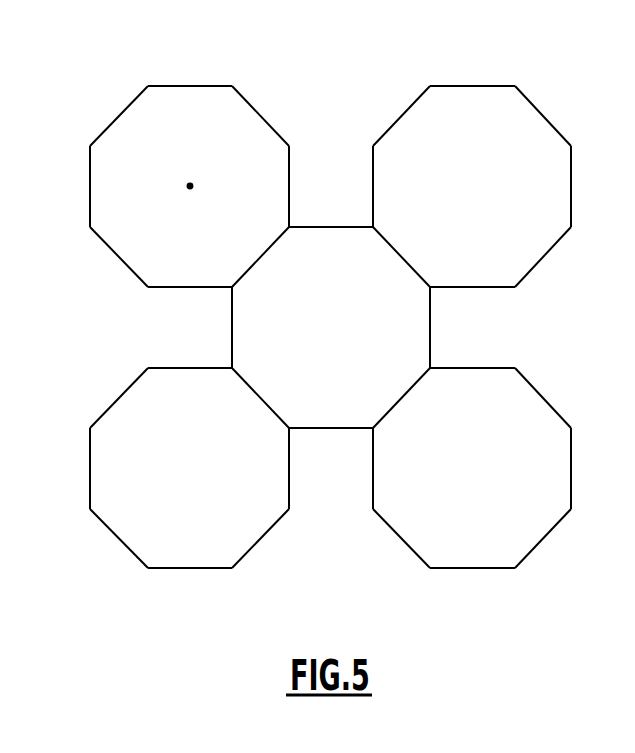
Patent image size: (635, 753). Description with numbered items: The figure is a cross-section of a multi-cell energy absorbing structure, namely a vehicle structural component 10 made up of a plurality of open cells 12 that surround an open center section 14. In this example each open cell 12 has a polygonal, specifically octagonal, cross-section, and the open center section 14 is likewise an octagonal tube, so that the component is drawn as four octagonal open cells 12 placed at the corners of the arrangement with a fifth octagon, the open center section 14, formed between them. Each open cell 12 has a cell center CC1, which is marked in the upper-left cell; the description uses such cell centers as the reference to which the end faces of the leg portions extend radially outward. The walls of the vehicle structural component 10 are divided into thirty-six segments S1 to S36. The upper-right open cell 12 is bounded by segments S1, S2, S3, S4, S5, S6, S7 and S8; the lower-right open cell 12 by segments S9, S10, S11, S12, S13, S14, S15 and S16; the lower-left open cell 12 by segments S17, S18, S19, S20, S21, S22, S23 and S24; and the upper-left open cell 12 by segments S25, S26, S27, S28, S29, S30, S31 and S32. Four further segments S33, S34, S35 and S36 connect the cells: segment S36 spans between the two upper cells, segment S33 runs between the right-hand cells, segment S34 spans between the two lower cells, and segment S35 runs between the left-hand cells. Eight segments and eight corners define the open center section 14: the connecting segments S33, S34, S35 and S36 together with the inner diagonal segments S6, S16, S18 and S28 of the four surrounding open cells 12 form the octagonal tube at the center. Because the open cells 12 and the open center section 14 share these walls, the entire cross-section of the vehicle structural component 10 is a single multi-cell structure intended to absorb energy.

The vehicle structural component 10 is at (352, 313).
The open cell 12 is at (214, 116).
The open center section 14 is at (410, 342).
The cell center CC1 is at (193, 188).
The segment S1 is at (472, 69).
The segment S2 is at (547, 116).
The segment S3 is at (561, 186).
The segment S4 is at (553, 257).
The segment S5 is at (472, 267).
The segment S6 is at (401, 258).
The segment S7 is at (394, 186).
The segment S8 is at (401, 111).
The segment S9 is at (472, 388).
The segment S10 is at (556, 398).
The segment S11 is at (597, 468).
The segment S12 is at (557, 539).
The segment S13 is at (472, 587).
The segment S14 is at (411, 538).
The segment S15 is at (398, 468).
The segment S16 is at (398, 398).
The segment S17 is at (190, 390).
The segment S18 is at (268, 397).
The segment S19 is at (275, 468).
The segment S20 is at (273, 540).
The segment S21 is at (190, 587).
The segment S22 is at (116, 539).
The segment S23 is at (117, 468).
The segment S24 is at (114, 397).
The segment S25 is at (190, 66).
The segment S26 is at (270, 116).
The segment S27 is at (273, 186).
The segment S28 is at (274, 257).
The segment S29 is at (190, 266).
The segment S30 is at (126, 254).
The segment S31 is at (116, 186).
The segment S32 is at (131, 116).
The segment S33 is at (457, 327).
The segment S34 is at (331, 448).
The segment S35 is at (215, 327).
The segment S36 is at (331, 209).